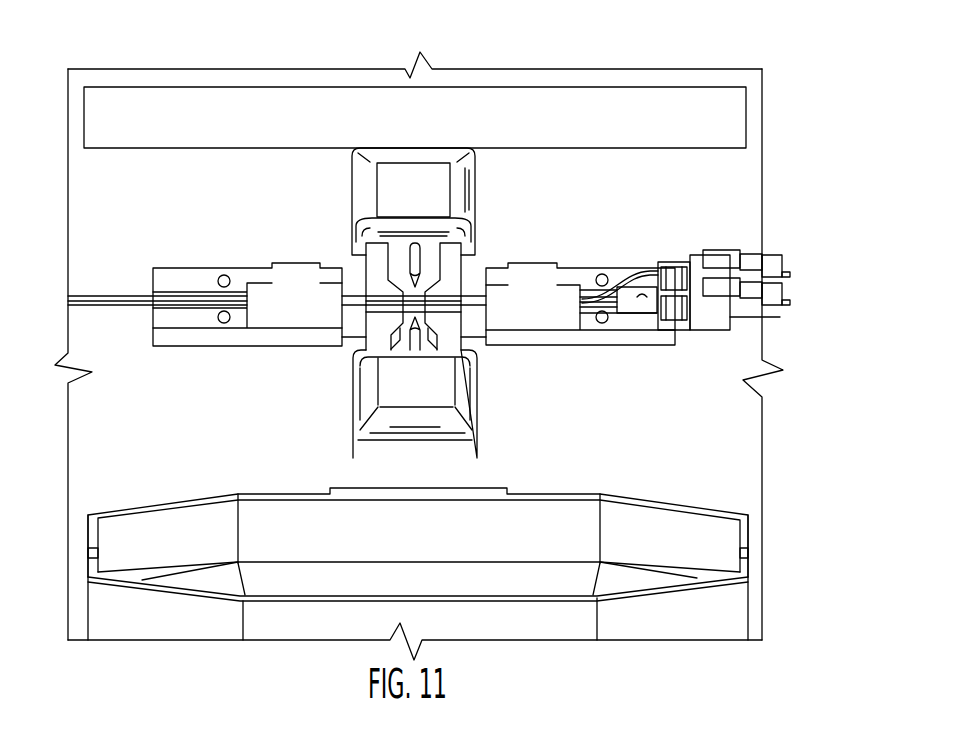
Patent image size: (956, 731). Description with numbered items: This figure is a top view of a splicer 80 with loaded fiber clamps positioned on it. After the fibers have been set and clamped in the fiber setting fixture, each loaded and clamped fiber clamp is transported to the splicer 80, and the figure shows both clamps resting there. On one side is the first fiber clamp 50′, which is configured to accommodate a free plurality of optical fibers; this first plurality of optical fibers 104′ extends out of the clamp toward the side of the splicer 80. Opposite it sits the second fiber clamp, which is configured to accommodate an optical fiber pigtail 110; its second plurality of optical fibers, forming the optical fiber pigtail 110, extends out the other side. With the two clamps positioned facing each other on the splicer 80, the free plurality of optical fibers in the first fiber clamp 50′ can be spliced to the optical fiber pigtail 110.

The splicer 80 is at (740, 180).
The first fiber clamp 50′ is at (221, 360).
The first plurality of optical fibers 104′ is at (113, 297).
The optical fiber pigtail 110 is at (668, 246).